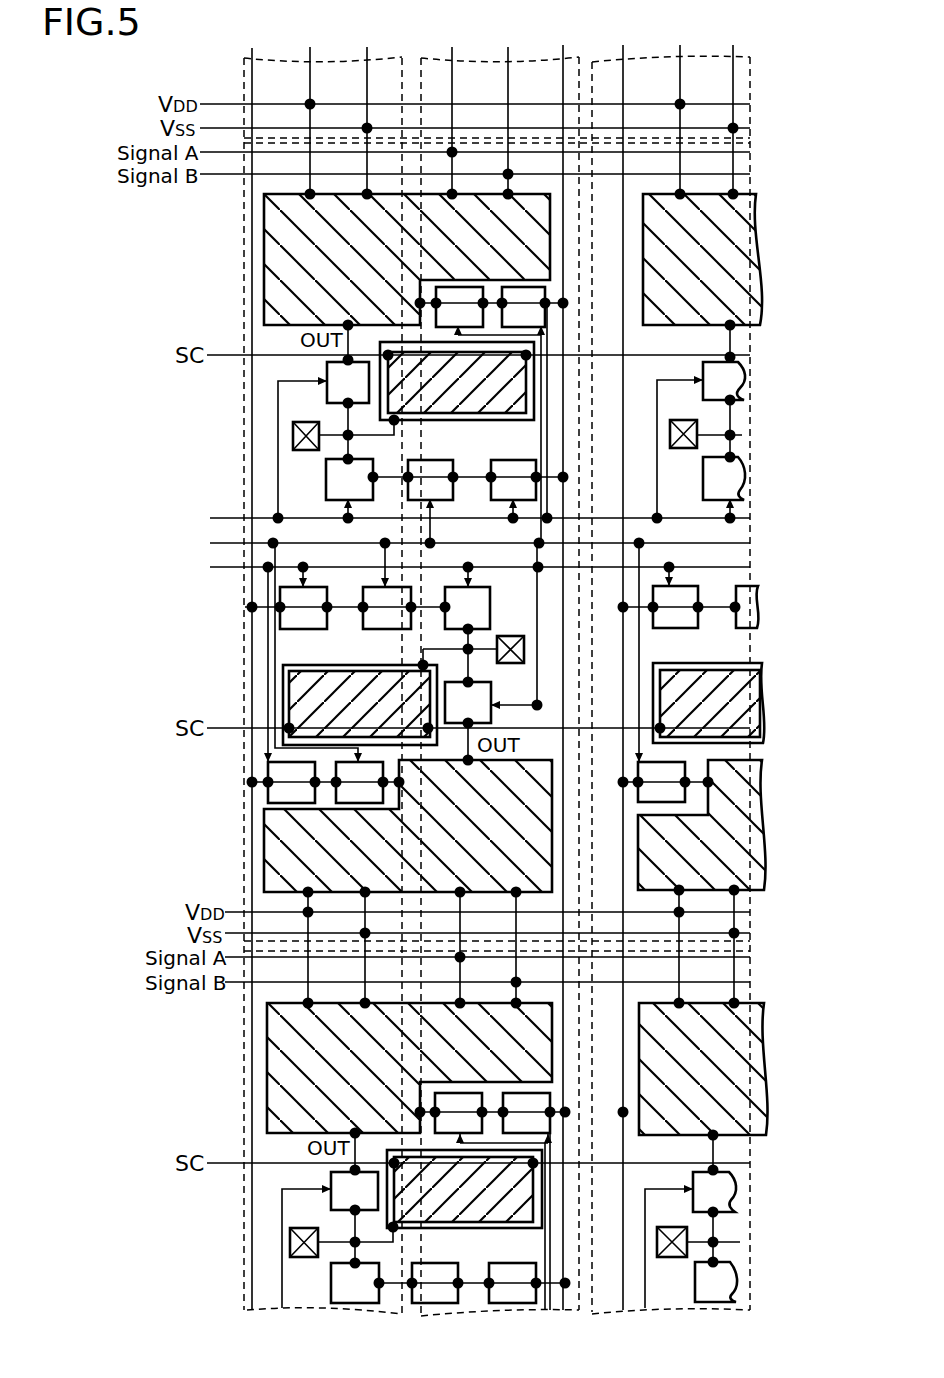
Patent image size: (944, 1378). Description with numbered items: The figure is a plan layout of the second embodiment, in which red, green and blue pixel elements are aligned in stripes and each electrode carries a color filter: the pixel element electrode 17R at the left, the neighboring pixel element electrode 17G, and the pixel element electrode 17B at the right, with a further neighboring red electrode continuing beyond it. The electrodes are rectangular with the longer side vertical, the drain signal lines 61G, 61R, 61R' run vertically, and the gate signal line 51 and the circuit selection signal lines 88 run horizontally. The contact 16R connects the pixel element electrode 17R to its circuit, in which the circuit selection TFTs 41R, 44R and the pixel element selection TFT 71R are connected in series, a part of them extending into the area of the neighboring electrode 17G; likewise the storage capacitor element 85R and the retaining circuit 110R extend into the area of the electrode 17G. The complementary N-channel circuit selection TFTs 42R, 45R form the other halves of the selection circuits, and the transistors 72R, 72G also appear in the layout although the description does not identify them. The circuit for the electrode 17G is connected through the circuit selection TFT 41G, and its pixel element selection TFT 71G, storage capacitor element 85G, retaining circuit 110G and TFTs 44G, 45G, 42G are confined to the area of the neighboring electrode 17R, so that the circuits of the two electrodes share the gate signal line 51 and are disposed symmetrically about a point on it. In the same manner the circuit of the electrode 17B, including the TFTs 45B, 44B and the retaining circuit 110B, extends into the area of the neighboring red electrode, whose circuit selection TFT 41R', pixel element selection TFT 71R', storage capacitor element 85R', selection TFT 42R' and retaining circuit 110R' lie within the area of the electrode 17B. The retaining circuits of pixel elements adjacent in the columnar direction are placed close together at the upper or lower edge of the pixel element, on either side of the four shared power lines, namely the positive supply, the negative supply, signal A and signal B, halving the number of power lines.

The drain signal line 61G is at (254, 667).
The drain signal line 61R is at (563, 667).
The drain signal line 61R' is at (628, 667).
The retaining circuit 110R is at (407, 259).
The retaining circuit 110G is at (408, 946).
The retaining circuit 110B is at (702, 259).
The retaining circuit 110R' is at (703, 947).
The transistor of red pixel circuit 72R is at (459, 307).
The N-channel circuit selection TFT 42R is at (523, 307).
The N-channel circuit selection TFT 45R is at (348, 382).
The storage capacitor element 85R is at (457, 381).
The contact 16R is at (293, 436).
The P-channel circuit selection TFT 44R is at (349, 479).
The pixel element selection TFT 71R is at (430, 480).
The P-channel circuit selection TFT 41R is at (513, 480).
The circuit selection signal line 88 is at (466, 543).
The gate signal line 51 is at (466, 543).
The P-channel circuit selection TFT 41G is at (408, 945).
The pixel element selection TFT 71G is at (410, 945).
The P-channel circuit selection TFT 44G is at (534, 945).
The N-channel circuit selection TFT 45G is at (533, 947).
The storage capacitor element 85G is at (412, 946).
The N-channel circuit selection TFT 42G is at (409, 947).
The transistor of green pixel circuit 72G is at (409, 947).
The P-channel circuit selection TFT 41R' is at (675, 607).
The pixel element selection TFT 71R' is at (783, 607).
The storage capacitor element 85R' is at (708, 703).
The N-channel circuit selection TFT 42R' is at (661, 782).
The N-channel circuit selection TFT 45B is at (724, 381).
The P-channel circuit selection TFT 44B is at (724, 478).
The pixel element electrode 17G is at (430, 635).
The pixel element electrode 17R is at (247, 842).
The pixel element electrode 17B is at (730, 651).